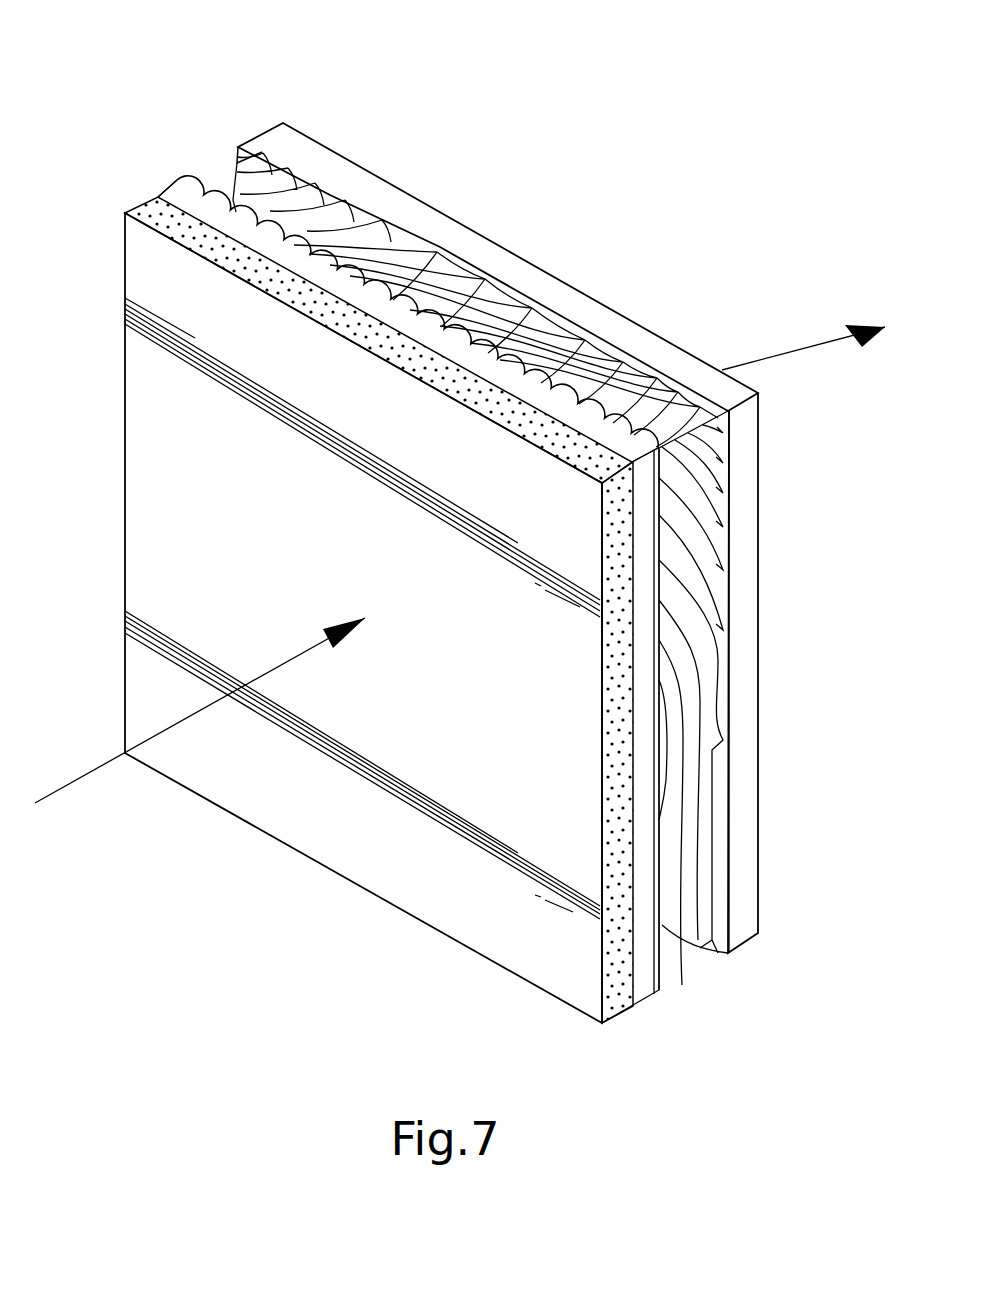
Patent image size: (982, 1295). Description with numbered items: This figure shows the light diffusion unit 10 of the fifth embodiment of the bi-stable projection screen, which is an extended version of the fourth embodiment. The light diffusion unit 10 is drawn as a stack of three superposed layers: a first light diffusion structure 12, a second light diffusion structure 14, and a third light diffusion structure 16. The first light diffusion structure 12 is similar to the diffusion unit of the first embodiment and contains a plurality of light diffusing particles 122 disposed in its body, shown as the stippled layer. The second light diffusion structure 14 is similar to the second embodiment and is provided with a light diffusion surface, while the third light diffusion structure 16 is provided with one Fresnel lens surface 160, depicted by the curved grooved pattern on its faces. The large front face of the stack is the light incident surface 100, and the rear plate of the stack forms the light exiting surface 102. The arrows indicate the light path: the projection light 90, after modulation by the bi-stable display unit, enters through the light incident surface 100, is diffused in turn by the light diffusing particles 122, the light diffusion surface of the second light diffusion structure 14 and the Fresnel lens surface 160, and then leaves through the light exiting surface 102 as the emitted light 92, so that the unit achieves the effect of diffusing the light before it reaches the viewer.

The light diffusion unit 10 is at (160, 80).
The light incident surface 100 is at (370, 845).
The light exiting surface 102 is at (452, 213).
The first light diffusion structure 12 is at (620, 1017).
The light diffusing particles 122 is at (625, 973).
The second light diffusion structure 14 is at (647, 968).
The third light diffusion structure 16 is at (748, 886).
The Fresnel lens surface 160 is at (725, 820).
The projection light 90 is at (73, 782).
The second direction 92 is at (803, 348).